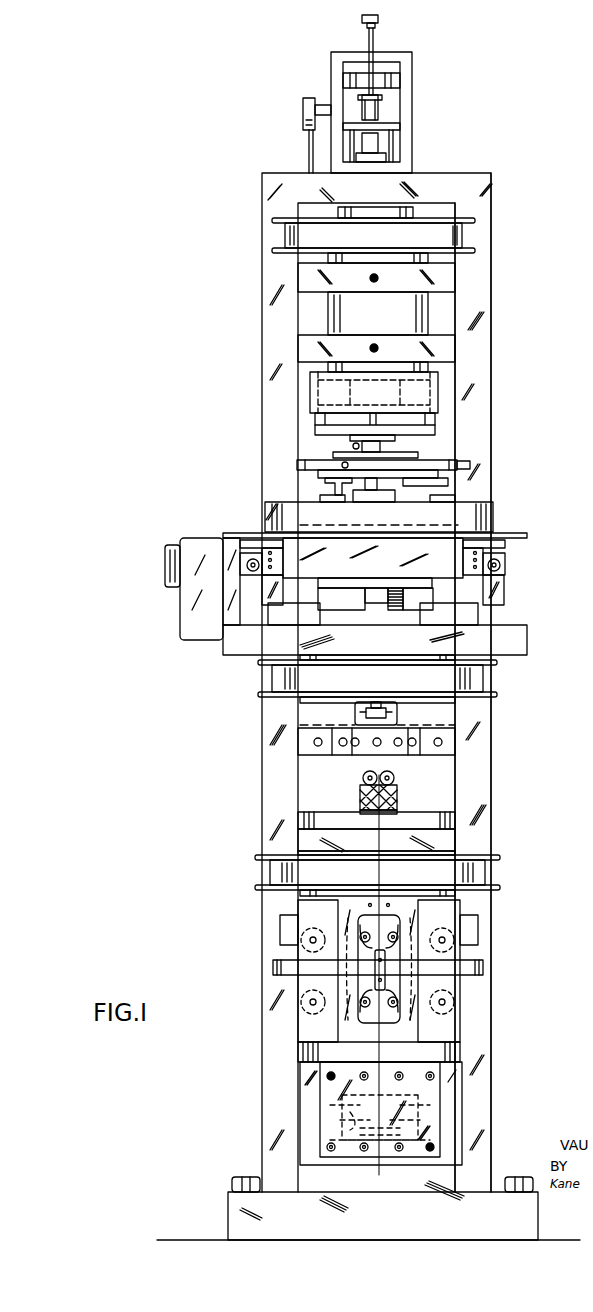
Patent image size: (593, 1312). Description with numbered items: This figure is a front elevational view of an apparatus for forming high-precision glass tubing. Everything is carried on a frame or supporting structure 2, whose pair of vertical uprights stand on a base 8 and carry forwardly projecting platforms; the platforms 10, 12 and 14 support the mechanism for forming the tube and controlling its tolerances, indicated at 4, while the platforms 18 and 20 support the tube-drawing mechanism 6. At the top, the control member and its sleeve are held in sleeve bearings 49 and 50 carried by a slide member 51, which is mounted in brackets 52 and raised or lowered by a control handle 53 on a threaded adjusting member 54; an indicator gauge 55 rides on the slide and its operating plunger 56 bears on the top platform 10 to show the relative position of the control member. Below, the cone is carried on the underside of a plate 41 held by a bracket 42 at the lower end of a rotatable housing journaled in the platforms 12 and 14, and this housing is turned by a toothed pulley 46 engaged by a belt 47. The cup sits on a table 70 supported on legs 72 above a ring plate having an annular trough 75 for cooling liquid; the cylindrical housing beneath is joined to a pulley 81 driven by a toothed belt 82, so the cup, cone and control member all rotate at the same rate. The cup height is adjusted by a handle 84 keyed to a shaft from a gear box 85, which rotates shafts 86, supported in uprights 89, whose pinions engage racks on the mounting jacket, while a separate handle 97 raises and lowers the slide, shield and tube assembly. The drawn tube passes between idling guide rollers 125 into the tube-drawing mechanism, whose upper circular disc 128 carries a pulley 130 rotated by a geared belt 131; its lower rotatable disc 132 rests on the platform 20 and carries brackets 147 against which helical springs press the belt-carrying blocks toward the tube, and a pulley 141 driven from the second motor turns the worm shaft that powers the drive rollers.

The frame or supporting structure 2 is at (494, 301).
The mechanism for forming the tube and controlling the tolerances thereof 4 is at (432, 452).
The tube-drawing mechanism 6 is at (458, 956).
The base 8 is at (228, 1199).
The platform 10 is at (300, 190).
The platform 12 is at (312, 268).
The platform 14 is at (312, 346).
The platform 18 is at (527, 646).
The platform 20 is at (320, 1072).
The plate 41 is at (436, 430).
The bracket 42 is at (310, 405).
The toothed pulley 46 is at (440, 217).
The belt 47 is at (365, 78).
The sleeve bearing 49 is at (380, 102).
The sleeve bearing 50 is at (384, 148).
The slide member 51 is at (386, 124).
The bracket 52 is at (413, 64).
The control handle 53 is at (380, 20).
The threaded adjusting member 54 is at (369, 36).
The indicator gauge 55 is at (303, 104).
The operating plunger 56 is at (309, 146).
The table 70 is at (297, 466).
The legs 72 is at (335, 489).
The annular trough 75 is at (493, 517).
The pulley 81 is at (430, 701).
The toothed or geared belt 82 is at (488, 678).
The handle 84 is at (165, 562).
The gear box 85 is at (181, 620).
The shafts 86 is at (240, 558).
The uprights 89 is at (503, 593).
The handle 97 is at (355, 713).
The idling guide rollers 125 is at (397, 791).
The circular disc 128 is at (300, 819).
The pulley 130 is at (290, 853).
The geared or toothed belt 131 is at (490, 877).
The rotatable disc 132 is at (460, 1053).
The pulley 141 is at (440, 1115).
The brackets 147 is at (275, 968).